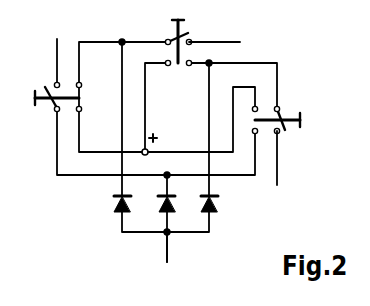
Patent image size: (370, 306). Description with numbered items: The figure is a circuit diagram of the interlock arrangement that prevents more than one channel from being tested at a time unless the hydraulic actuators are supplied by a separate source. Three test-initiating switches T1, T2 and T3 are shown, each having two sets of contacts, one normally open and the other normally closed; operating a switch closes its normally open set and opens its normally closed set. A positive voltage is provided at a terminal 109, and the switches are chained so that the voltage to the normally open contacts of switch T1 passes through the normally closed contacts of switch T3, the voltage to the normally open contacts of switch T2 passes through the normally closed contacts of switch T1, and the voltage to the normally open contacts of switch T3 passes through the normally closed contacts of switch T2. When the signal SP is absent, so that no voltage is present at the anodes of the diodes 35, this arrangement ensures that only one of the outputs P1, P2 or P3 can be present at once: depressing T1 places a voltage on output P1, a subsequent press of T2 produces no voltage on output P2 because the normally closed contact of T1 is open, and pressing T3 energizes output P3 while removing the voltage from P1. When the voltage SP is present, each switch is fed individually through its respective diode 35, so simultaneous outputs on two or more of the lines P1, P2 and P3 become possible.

The output P1 is at (56, 49).
The switch T1 is at (50, 105).
The switch T2 is at (188, 29).
The output P2 is at (228, 41).
The switch T3 is at (283, 106).
The output P3 is at (275, 173).
The terminal 109 is at (146, 148).
The diode 35 is at (161, 208).
The signal SP is at (166, 261).